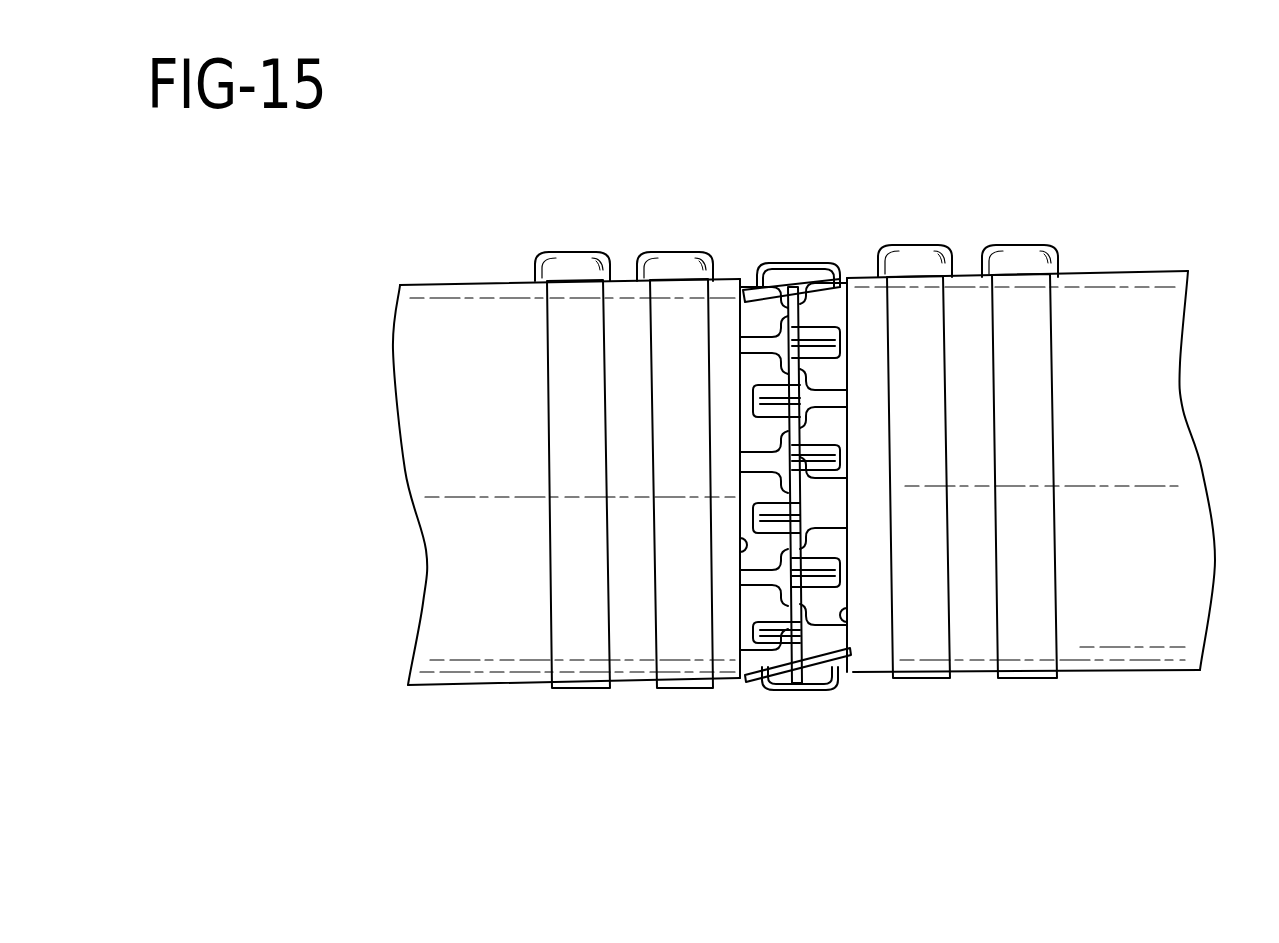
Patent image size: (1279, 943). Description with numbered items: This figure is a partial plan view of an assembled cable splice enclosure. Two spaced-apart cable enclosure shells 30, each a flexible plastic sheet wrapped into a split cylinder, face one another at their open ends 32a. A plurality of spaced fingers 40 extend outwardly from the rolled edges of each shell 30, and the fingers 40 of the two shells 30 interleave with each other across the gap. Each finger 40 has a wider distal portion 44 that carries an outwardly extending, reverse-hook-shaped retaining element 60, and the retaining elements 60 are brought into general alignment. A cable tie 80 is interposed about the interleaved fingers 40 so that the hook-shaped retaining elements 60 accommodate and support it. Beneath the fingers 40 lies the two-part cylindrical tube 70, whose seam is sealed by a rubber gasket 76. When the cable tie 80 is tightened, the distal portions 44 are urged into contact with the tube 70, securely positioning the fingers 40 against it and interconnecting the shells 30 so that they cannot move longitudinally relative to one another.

The cable enclosure shell 30 is at (447, 347).
The open end 32a is at (743, 557).
The finger 40 is at (840, 398).
The distal portion 44 is at (758, 278).
The retaining element 60 is at (757, 284).
The two-part cylindrical tube 70 is at (833, 313).
The rubber gasket 76 is at (768, 578).
The cable tie 80 is at (838, 277).